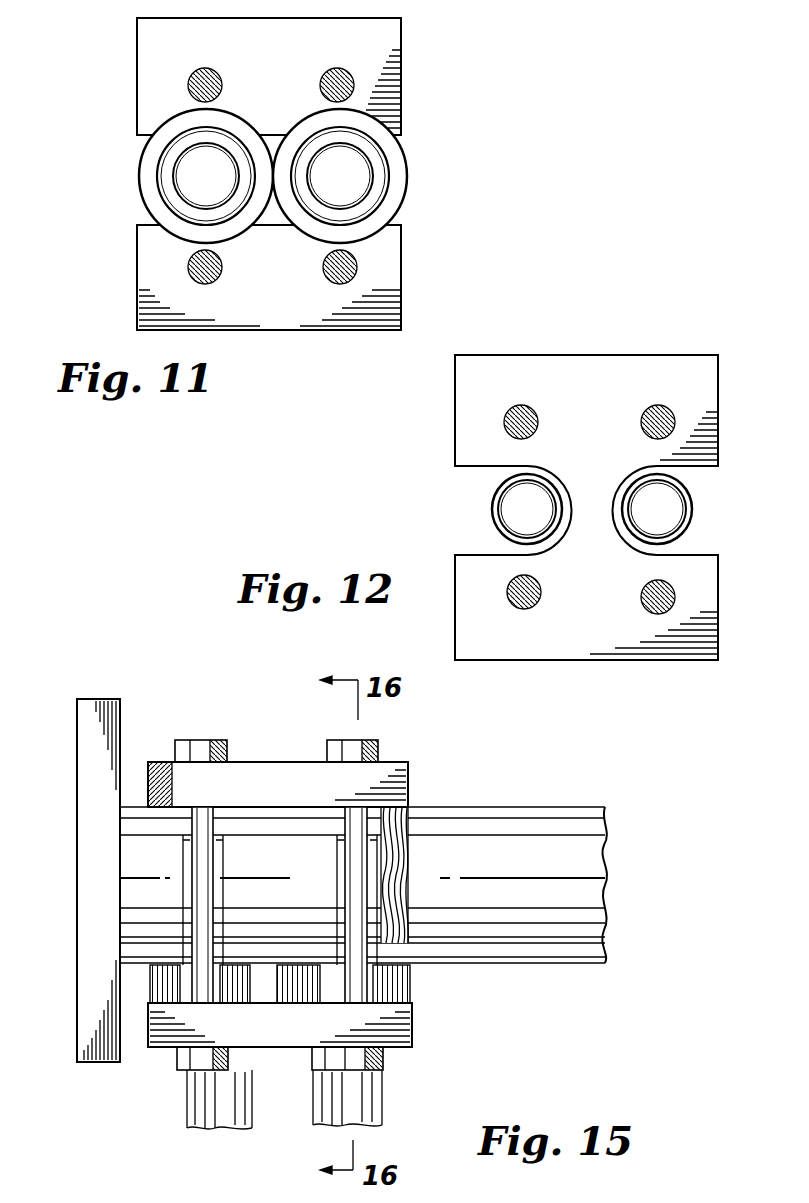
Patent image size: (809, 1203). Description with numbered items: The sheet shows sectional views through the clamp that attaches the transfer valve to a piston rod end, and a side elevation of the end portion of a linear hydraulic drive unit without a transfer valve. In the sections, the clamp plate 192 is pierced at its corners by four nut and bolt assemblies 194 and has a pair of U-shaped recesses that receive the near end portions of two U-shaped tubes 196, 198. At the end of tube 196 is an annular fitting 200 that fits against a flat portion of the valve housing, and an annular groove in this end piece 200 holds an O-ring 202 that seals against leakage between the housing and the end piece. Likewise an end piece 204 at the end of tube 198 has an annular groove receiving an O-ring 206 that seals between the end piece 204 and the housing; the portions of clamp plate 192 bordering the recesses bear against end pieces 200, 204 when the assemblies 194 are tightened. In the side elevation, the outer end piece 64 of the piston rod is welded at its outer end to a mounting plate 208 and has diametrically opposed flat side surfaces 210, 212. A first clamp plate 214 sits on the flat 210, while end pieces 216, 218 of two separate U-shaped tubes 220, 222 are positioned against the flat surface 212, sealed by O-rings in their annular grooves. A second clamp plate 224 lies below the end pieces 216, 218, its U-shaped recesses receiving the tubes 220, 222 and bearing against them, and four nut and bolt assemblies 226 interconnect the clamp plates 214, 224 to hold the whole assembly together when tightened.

In FIG. 15, the outer end of piston rod 64 is at (135, 851).
In FIG. 11, the clamp plate 192 is at (267, 320).
In FIG. 12, the clamp plate 192 is at (577, 650).
In FIG. 11, the nut and bolt assemblies 194 is at (206, 68).
In FIG. 12, the nut and bolt assemblies 194 is at (534, 405).
In FIG. 12, the U-shaped tube 196 is at (491, 507).
In FIG. 12, the U-shaped tube 198 is at (693, 516).
In FIG. 11, the annular fitting 200 is at (150, 198).
In FIG. 11, the O-ring 202 is at (157, 170).
In FIG. 11, the end piece 204 is at (403, 202).
In FIG. 11, the O-ring 206 is at (393, 182).
In FIG. 15, the mounting plate 208 is at (92, 947).
In FIG. 15, the flat side surface 210 is at (275, 805).
In FIG. 15, the flat side surface 212 is at (260, 967).
In FIG. 15, the first clamp plate 214 is at (400, 775).
In FIG. 15, the end piece 216 is at (162, 985).
In FIG. 15, the end piece 218 is at (402, 988).
In FIG. 15, the U-shaped tube 220 is at (197, 1112).
In FIG. 15, the U-shaped tube 222 is at (370, 1108).
In FIG. 15, the second clamp plate 224 is at (398, 1030).
In FIG. 15, the nut and bolt assemblies 226 is at (205, 740).